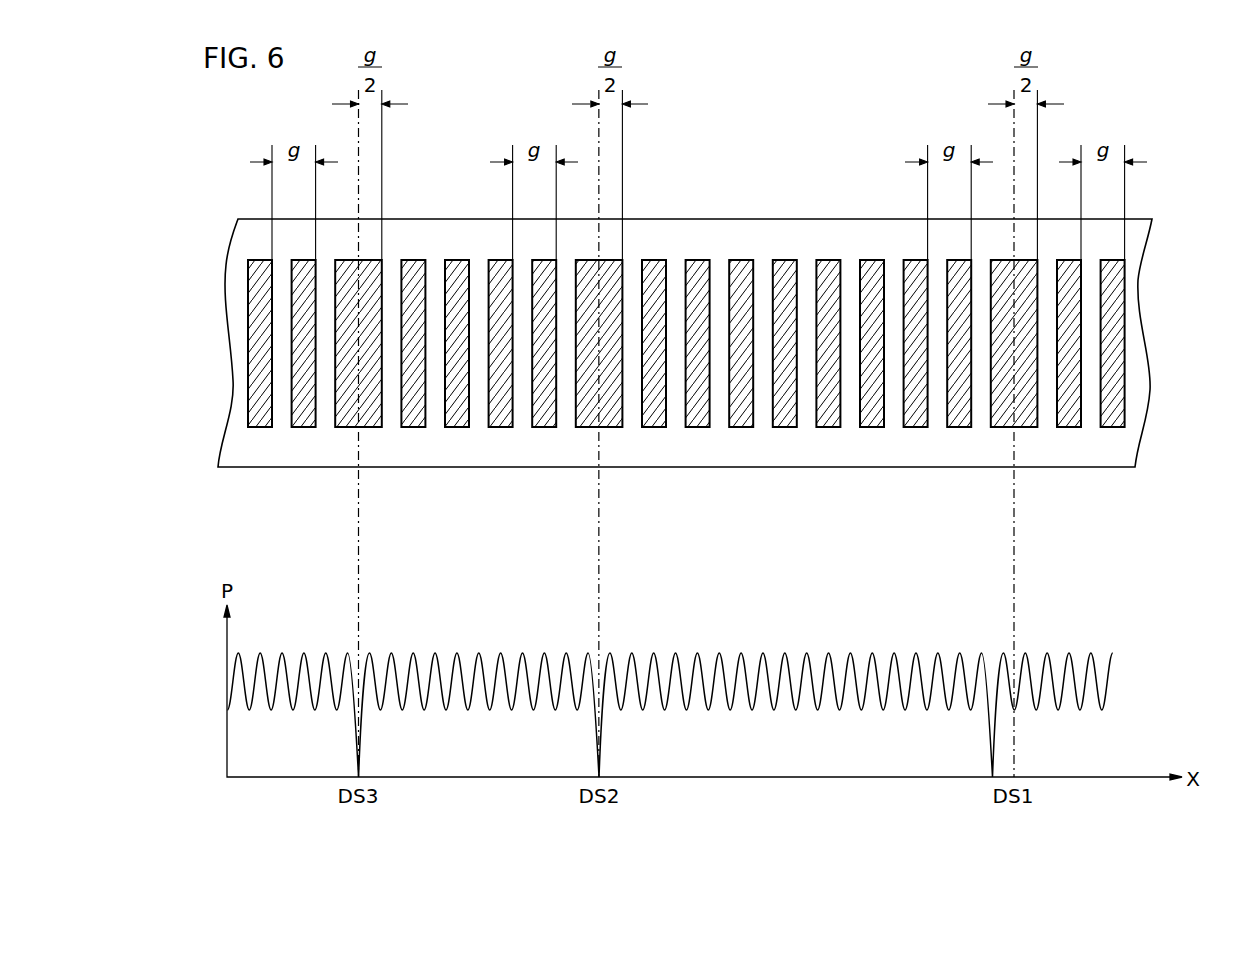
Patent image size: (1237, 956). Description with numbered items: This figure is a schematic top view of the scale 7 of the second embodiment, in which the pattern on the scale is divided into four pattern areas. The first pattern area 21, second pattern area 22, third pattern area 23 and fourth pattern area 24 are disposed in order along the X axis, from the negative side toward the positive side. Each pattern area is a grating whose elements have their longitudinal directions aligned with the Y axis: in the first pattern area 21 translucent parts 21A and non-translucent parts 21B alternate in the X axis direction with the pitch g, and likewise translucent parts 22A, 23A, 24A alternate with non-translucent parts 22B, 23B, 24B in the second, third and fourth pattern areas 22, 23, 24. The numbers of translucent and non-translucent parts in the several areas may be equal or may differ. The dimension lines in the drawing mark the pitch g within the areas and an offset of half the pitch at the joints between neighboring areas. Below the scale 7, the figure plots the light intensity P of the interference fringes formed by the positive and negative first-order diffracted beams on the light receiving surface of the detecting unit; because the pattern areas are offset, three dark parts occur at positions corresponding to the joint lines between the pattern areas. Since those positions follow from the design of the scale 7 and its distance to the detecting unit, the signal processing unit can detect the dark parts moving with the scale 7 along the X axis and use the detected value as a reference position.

The scale 7 is at (1147, 343).
The first pattern area 21 is at (1121, 334).
The second pattern area 22 is at (806, 323).
The third pattern area 23 is at (478, 322).
The fourth pattern area 24 is at (262, 334).
The translucent part 21A is at (1092, 420).
The non-translucent part 21B is at (1111, 420).
The translucent part 22A is at (763, 420).
The non-translucent part 22B is at (783, 420).
The translucent part 23A is at (479, 420).
The non-translucent part 23B is at (502, 420).
The translucent part 24A is at (281, 420).
The non-translucent part 24B is at (305, 420).